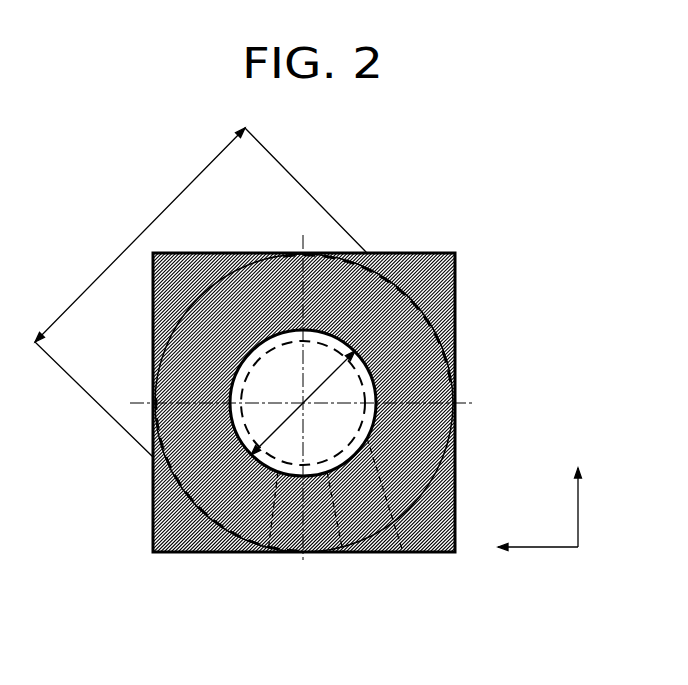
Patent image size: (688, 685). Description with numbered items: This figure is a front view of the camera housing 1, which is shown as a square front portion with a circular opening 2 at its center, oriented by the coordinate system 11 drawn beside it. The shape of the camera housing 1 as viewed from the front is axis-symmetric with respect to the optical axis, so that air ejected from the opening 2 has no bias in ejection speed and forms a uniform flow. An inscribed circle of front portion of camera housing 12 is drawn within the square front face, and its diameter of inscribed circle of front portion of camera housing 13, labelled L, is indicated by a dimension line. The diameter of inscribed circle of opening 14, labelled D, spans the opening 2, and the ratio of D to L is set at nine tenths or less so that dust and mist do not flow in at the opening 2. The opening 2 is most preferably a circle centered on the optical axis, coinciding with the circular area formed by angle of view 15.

The camera housing 1 is at (170, 552).
The opening 2 is at (348, 552).
The coordinate system 11 is at (555, 547).
The inscribed circle of front portion of camera housing 12 is at (457, 535).
The diameter of inscribed circle of front portion of camera housing 13 is at (187, 187).
The diameter of inscribed circle of opening 14 is at (267, 552).
The area formed by angle of view 15 is at (412, 552).